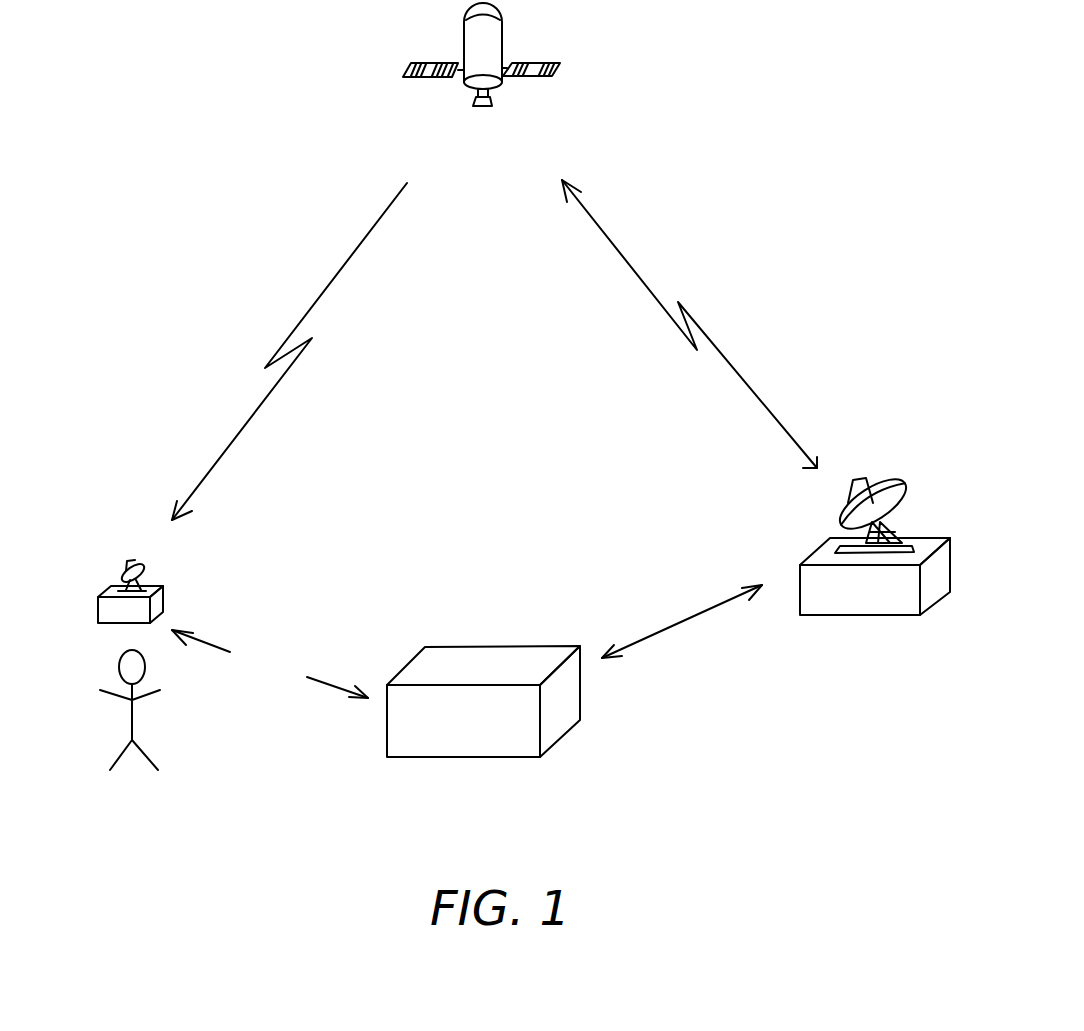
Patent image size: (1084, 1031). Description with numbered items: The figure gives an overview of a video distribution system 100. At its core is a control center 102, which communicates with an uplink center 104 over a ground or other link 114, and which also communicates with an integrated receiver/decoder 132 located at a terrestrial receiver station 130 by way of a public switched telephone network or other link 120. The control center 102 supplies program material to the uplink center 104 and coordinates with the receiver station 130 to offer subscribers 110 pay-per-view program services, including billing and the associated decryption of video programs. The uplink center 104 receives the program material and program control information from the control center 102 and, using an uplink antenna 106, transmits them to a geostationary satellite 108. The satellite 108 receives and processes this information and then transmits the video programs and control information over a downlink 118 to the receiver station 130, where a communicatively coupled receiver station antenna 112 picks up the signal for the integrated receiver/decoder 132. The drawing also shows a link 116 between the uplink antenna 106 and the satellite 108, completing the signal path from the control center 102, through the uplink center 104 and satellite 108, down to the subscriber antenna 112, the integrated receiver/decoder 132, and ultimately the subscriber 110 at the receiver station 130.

The video distribution system 100 is at (785, 220).
The control center 102 is at (560, 737).
The uplink center 104 is at (857, 615).
The uplink antenna 106 is at (908, 482).
The geostationary satellite 108 is at (528, 76).
The subscriber 110 is at (160, 715).
The receiver station antenna 112 is at (130, 565).
The ground link 114 is at (677, 622).
The feeder link 116 is at (733, 367).
The downlink 118 is at (337, 277).
The public switched telephone network link 120 is at (305, 638).
The terrestrial receiver station 130 is at (185, 573).
The integrated receiver/decoder 132 is at (97, 612).